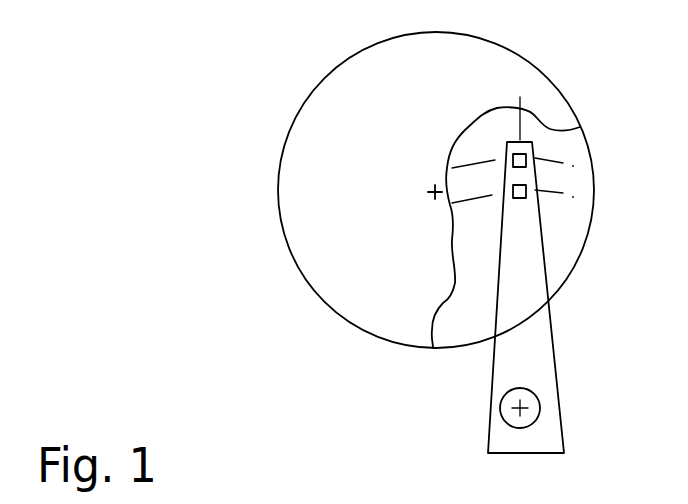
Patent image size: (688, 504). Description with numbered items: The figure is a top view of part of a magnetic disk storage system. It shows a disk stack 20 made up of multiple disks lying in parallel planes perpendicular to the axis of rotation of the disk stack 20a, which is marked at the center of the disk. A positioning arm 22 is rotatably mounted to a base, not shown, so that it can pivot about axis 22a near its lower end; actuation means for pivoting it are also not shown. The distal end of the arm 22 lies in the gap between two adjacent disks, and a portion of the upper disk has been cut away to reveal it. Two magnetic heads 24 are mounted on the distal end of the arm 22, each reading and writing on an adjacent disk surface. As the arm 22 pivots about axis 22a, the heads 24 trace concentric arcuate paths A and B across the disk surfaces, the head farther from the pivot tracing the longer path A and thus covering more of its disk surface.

The disk stack 20 is at (510, 52).
The axis of rotation of the disk stack 20a is at (430, 191).
The positioning arm 22 is at (558, 374).
The pivot axis of the arm 22a is at (508, 421).
The magnetic heads 24 is at (535, 188).
The arcuate path A is at (462, 165).
The arcuate path B is at (490, 195).